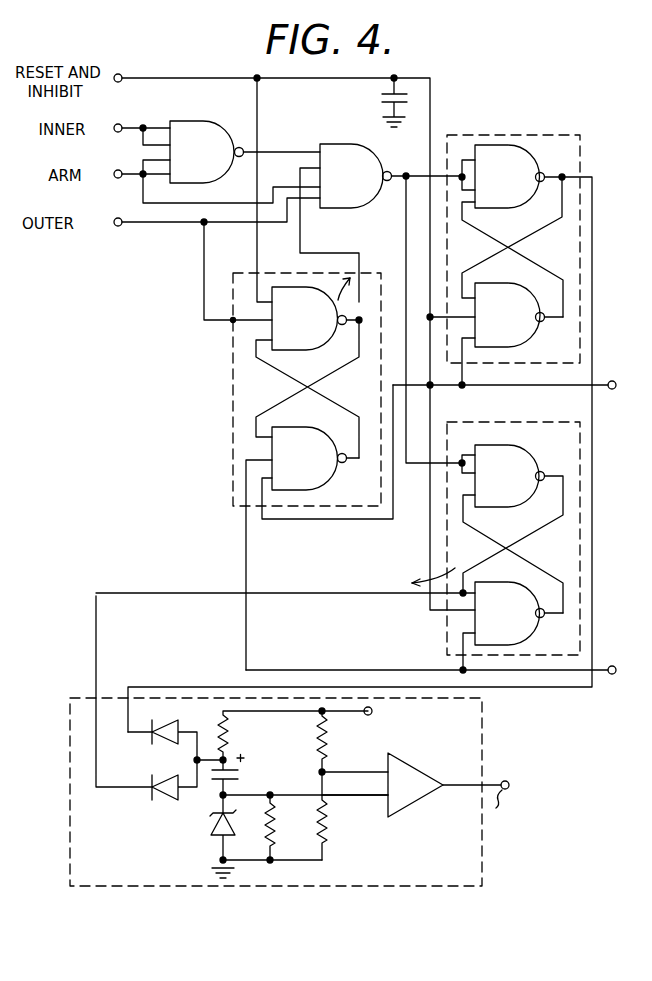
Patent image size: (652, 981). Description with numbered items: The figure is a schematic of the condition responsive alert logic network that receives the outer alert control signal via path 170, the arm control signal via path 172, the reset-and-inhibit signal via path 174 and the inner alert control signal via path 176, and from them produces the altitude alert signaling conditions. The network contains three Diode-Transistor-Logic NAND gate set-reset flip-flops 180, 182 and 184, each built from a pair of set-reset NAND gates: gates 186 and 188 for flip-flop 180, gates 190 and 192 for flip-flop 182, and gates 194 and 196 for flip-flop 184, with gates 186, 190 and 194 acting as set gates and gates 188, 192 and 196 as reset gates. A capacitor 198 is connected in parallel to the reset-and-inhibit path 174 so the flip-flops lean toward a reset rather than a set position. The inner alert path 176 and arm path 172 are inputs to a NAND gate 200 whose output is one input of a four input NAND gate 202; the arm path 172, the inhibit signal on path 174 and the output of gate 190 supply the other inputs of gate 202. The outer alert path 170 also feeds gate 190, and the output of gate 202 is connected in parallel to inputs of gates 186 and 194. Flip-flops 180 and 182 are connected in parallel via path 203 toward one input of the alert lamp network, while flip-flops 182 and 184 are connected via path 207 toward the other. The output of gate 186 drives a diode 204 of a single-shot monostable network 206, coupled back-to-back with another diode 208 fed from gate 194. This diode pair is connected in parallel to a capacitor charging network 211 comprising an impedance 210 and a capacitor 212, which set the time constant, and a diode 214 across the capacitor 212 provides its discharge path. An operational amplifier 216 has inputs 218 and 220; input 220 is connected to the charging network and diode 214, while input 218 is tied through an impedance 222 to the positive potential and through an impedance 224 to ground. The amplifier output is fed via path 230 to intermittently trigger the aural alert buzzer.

The outer alert control signal path 170 is at (140, 226).
The arm control signal path 172 is at (123, 181).
The reset-and-inhibit signal path 174 is at (205, 80).
The inner alert control signal path 176 is at (127, 125).
The DTL NAND gate set-reset flip-flop 180 is at (550, 134).
The DTL NAND gate set-reset flip-flop 182 is at (232, 393).
The DTL NAND gate set-reset flip-flop 184 is at (512, 420).
The set NAND gate 186 is at (490, 203).
The reset NAND gate 188 is at (522, 340).
The set NAND gate 190 is at (290, 350).
The reset NAND gate 192 is at (322, 479).
The set NAND gate 194 is at (497, 505).
The reset NAND gate 196 is at (524, 632).
The capacitor 198 is at (380, 96).
The NAND gate 200 is at (228, 182).
The four input NAND gate 202 is at (336, 146).
The path 203 is at (598, 384).
The diode 204 is at (168, 750).
The single-shot integrated circuit monostable network 206 is at (70, 805).
The path 207 is at (612, 676).
The diode 208 is at (163, 801).
The impedance 210 is at (280, 818).
The capacitor charging network 211 is at (259, 771).
The capacitor 212 is at (240, 779).
The diode 214 is at (214, 828).
The operational amplifier 216 is at (420, 768).
The input 218 is at (392, 757).
The input 220 is at (392, 802).
The impedance 222 is at (325, 738).
The impedance 224 is at (328, 828).
The path 230 is at (497, 780).